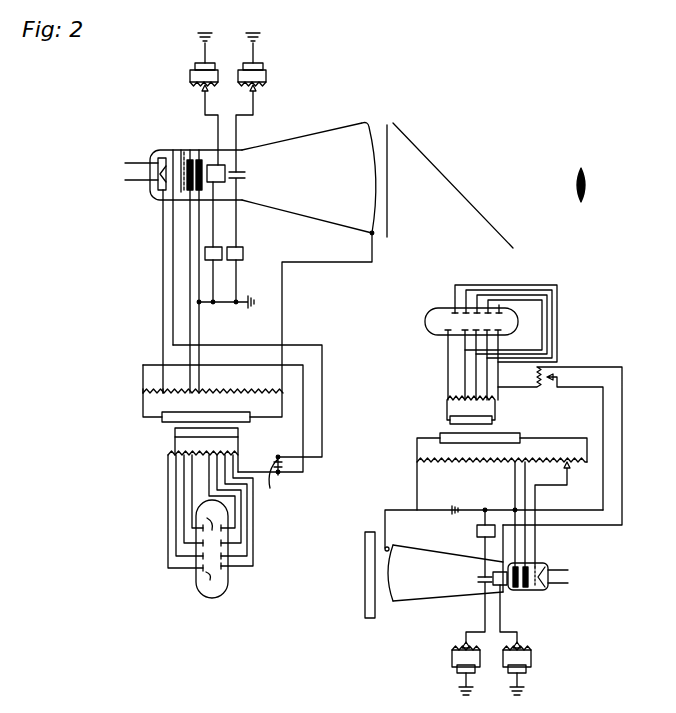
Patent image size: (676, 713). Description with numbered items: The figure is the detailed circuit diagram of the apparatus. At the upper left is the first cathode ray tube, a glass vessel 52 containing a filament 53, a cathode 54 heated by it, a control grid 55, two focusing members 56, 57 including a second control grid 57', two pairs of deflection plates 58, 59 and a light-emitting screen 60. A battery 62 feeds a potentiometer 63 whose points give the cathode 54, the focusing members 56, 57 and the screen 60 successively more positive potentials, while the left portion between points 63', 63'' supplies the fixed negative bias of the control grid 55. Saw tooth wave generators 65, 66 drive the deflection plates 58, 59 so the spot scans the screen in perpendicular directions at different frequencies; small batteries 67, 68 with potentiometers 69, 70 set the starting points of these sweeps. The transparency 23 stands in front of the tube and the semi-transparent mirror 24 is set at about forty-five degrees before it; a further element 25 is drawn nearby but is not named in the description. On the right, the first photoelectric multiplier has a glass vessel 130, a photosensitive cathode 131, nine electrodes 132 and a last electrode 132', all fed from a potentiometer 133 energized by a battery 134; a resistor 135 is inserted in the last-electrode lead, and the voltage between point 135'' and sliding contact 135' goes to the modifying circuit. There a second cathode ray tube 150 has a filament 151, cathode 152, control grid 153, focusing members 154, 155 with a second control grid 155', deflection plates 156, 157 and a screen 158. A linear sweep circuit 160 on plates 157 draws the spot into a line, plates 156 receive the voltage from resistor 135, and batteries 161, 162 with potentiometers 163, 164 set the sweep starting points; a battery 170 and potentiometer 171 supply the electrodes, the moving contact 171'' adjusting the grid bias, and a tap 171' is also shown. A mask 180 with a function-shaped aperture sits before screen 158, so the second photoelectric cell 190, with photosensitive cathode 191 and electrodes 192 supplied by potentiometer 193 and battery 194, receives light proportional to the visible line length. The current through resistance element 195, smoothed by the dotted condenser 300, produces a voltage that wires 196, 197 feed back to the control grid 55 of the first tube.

The transparency 23 is at (390, 175).
The semi-transparent mirror 24 is at (443, 177).
The light source 25 is at (588, 176).
The glass vessel 52 is at (282, 143).
The filament 53 is at (158, 165).
The cathode 54 is at (172, 152).
The control grid 55 is at (180, 152).
The focusing member 56 is at (190, 158).
The focusing member 57 is at (204, 255).
The second control grid 57' is at (177, 157).
The deflection plates 58 is at (216, 182).
The deflection plates 59 is at (244, 173).
The screen 60 is at (376, 153).
The battery 62 is at (196, 412).
The potentiometer 63 is at (213, 388).
The potentiometer point 63' is at (173, 386).
The potentiometer point 63'' is at (132, 391).
The saw tooth wave generator 65 is at (218, 247).
The saw tooth wave generator 66 is at (243, 248).
The battery 67 is at (200, 63).
The battery 68 is at (265, 63).
The potentiometer 69 is at (200, 125).
The potentiometer 70 is at (255, 128).
The glass vessel 130 is at (425, 318).
The photosensitive cathode 131 is at (439, 322).
The additional electrodes 132 is at (486, 324).
The last electrode 132' is at (511, 324).
The potentiometer 133 is at (471, 408).
The battery 134 is at (490, 418).
The resistor 135 is at (560, 446).
The sliding contact 135' is at (575, 440).
The resistor point 135'' is at (576, 354).
The cathode ray tube 150 is at (402, 548).
The filament 151 is at (570, 573).
The cathode 152 is at (548, 565).
The control grid 153 is at (538, 588).
The focusing member 154 is at (520, 590).
The focusing member 155 is at (515, 592).
The second control grid 155' is at (559, 604).
The deflection plates 156 is at (496, 572).
The deflection plates 157 is at (478, 578).
The screen 158 is at (386, 572).
The linear sweep circuit 160 is at (477, 530).
The battery 161 is at (458, 670).
The battery 162 is at (526, 670).
The potentiometer 163 is at (460, 665).
The potentiometer 164 is at (524, 666).
The battery 170 is at (515, 436).
The potentiometer 171 is at (502, 506).
The potentiometer wiper 171' is at (552, 514).
The moving contact 171'' is at (588, 475).
The mask 180 is at (369, 532).
The photoelectric cell 190 is at (229, 583).
The photosensitive cathode 191 is at (211, 581).
The additional electrodes 192 is at (212, 516).
The potentiometer 193 is at (203, 456).
The battery 194 is at (238, 433).
The resistance element 195 is at (274, 471).
The wire 196 is at (304, 405).
The wire 197 is at (323, 389).
The condenser 300 is at (290, 469).